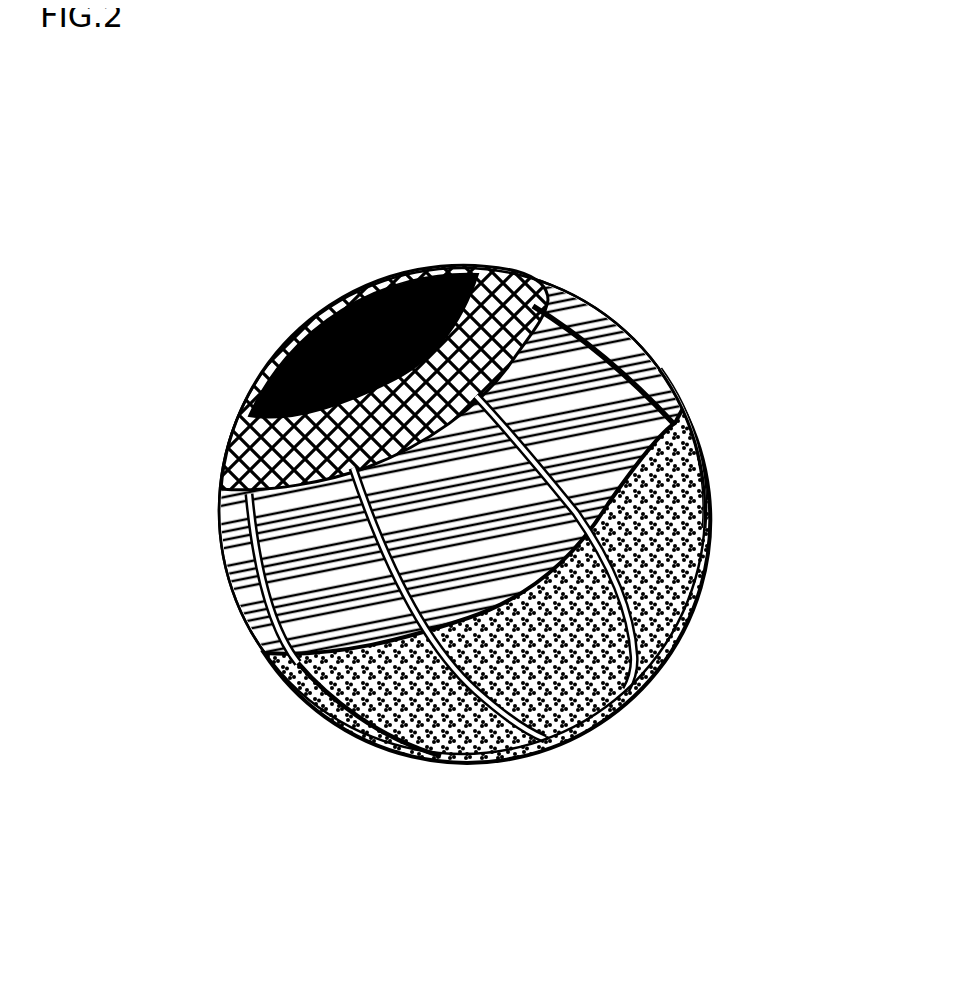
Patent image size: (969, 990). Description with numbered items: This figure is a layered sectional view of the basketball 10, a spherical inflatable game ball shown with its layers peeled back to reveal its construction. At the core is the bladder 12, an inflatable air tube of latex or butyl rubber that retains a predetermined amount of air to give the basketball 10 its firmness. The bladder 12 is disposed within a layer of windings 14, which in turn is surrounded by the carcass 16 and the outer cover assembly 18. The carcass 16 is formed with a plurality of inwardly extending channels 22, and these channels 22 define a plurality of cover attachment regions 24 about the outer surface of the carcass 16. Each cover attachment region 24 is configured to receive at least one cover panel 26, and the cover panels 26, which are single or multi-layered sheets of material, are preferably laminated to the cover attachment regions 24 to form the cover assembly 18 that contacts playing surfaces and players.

The basketball 10 is at (181, 244).
The bladder 12 is at (373, 277).
The layer of windings 14 is at (500, 263).
The carcass 16 is at (612, 333).
The cover assembly 18 is at (688, 560).
The channels 22 is at (457, 693).
The cover attachment regions 24 is at (298, 567).
The cover panels 26 is at (558, 667).